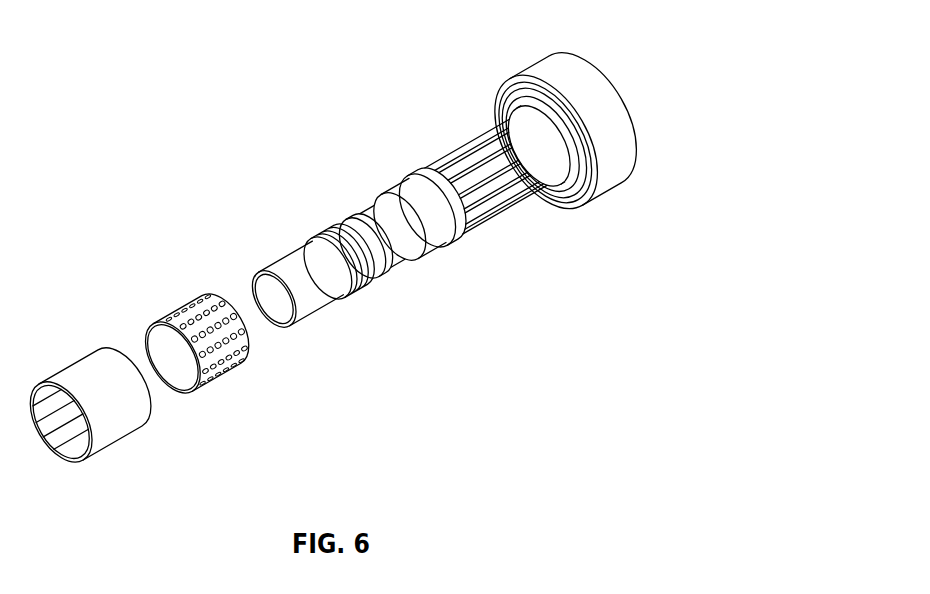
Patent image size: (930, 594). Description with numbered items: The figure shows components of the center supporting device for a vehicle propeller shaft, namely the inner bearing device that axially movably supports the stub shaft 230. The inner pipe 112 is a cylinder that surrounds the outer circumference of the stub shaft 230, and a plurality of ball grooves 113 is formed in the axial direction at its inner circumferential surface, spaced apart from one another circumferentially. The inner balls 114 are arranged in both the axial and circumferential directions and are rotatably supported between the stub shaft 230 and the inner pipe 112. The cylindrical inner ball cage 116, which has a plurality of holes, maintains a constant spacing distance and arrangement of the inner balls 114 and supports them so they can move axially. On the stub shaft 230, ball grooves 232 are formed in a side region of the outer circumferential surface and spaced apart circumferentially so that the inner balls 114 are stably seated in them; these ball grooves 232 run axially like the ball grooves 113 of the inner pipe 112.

The inner pipe 112 is at (91, 379).
The ball grooves 113 is at (59, 418).
The inner balls 114 is at (204, 307).
The inner ball cage 116 is at (203, 295).
The stub shaft 230 is at (439, 202).
The ball grooves 232 is at (465, 113).